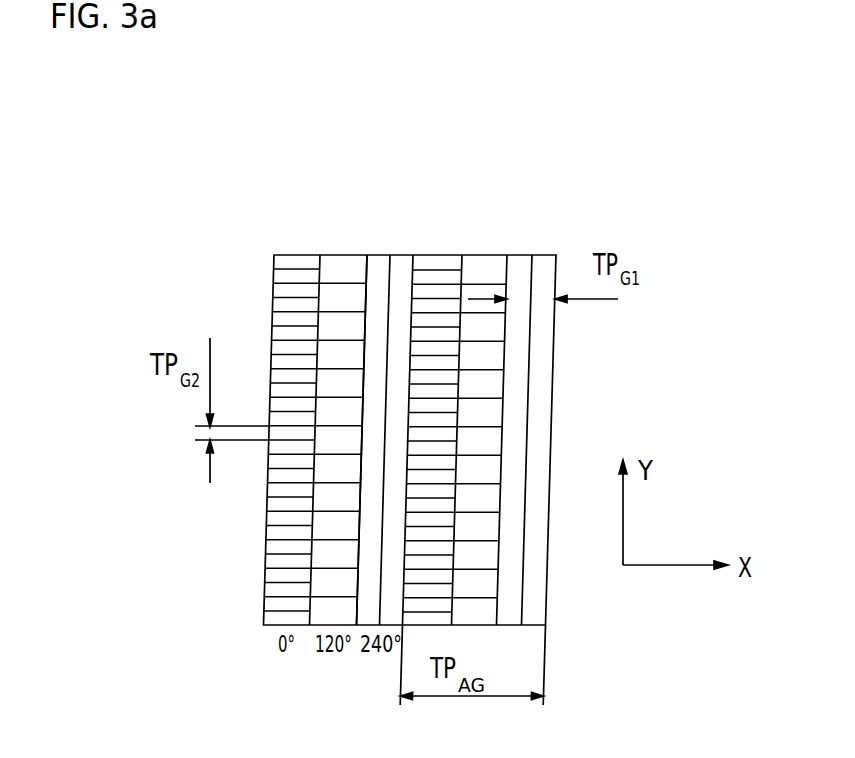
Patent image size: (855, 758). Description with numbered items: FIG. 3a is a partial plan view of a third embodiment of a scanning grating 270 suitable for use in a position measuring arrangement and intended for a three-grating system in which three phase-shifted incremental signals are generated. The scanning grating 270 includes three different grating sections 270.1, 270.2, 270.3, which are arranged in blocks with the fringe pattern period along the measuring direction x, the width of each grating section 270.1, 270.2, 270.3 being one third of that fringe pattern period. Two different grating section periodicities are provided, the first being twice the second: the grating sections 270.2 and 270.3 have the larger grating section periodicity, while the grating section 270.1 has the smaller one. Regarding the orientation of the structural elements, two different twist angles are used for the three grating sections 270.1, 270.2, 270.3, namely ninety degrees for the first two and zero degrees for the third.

The scanning grating 270 is at (452, 426).
The grating section 270.1 is at (300, 255).
The grating section 270.2 is at (357, 255).
The grating section 270.3 is at (412, 255).